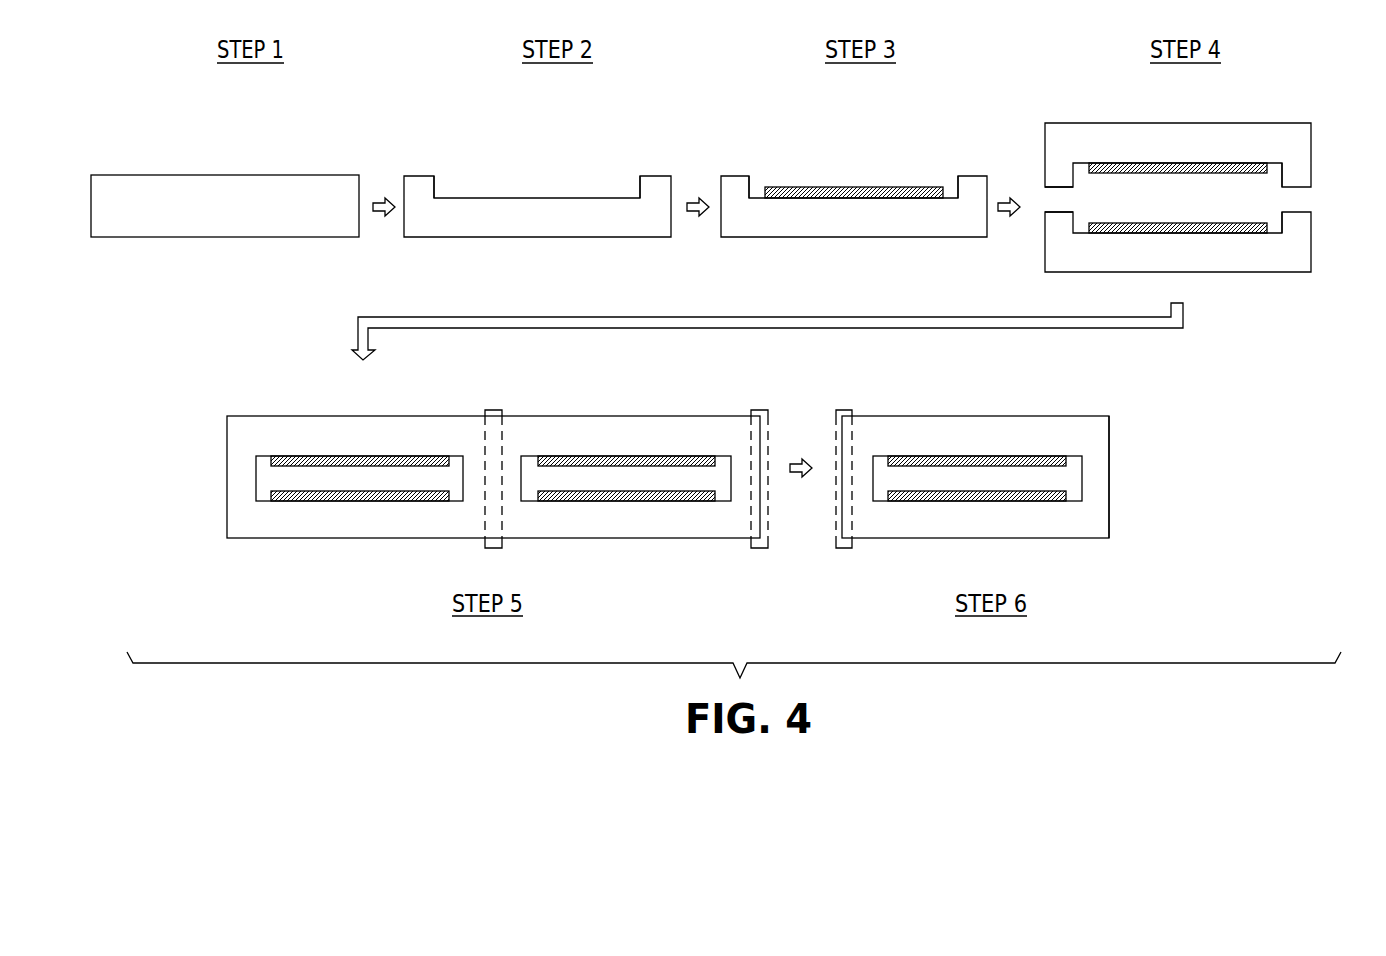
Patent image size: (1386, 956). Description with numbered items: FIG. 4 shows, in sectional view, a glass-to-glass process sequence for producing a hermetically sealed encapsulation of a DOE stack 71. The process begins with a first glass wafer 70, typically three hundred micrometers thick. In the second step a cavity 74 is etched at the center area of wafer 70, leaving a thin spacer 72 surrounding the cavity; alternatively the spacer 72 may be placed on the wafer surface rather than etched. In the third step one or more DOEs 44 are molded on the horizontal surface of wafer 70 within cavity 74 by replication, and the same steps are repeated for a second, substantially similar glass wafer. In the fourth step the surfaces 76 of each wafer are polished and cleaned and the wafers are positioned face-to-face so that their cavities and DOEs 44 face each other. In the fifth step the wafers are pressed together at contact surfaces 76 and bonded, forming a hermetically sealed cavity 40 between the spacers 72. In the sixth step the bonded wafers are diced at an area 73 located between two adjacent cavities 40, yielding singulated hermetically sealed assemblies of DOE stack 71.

The hermetically sealed cavity 40 is at (263, 475).
The DOE 44 is at (853, 187).
The first glass wafer 70 is at (701, 310).
The DOE stack 71 is at (1156, 398).
The spacer 72 is at (635, 188).
The dicing area 73 is at (492, 410).
The cavity 74 is at (518, 190).
The contact surface 76 is at (1058, 212).